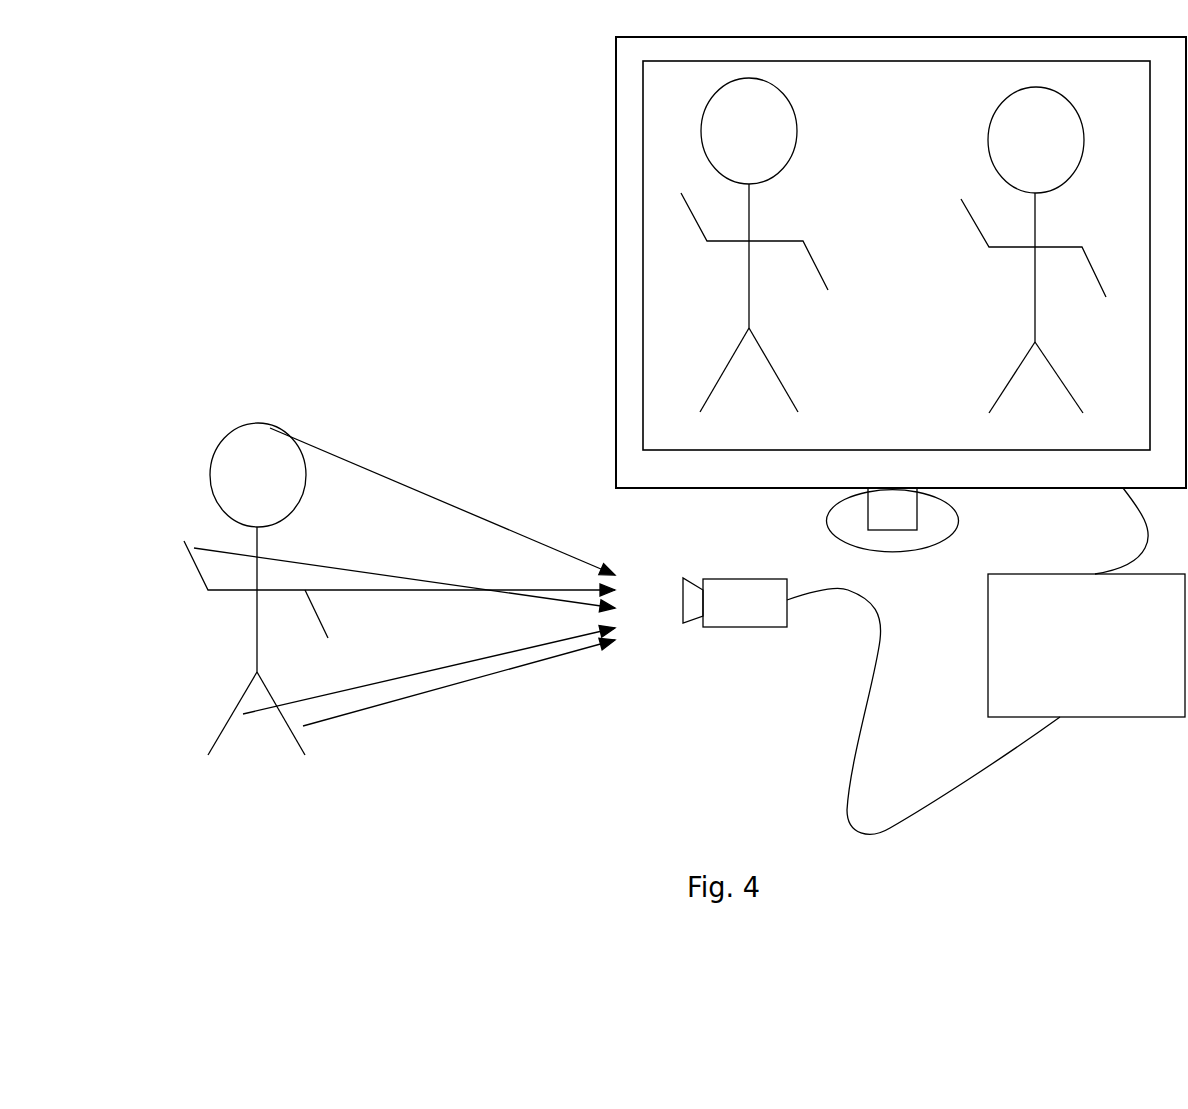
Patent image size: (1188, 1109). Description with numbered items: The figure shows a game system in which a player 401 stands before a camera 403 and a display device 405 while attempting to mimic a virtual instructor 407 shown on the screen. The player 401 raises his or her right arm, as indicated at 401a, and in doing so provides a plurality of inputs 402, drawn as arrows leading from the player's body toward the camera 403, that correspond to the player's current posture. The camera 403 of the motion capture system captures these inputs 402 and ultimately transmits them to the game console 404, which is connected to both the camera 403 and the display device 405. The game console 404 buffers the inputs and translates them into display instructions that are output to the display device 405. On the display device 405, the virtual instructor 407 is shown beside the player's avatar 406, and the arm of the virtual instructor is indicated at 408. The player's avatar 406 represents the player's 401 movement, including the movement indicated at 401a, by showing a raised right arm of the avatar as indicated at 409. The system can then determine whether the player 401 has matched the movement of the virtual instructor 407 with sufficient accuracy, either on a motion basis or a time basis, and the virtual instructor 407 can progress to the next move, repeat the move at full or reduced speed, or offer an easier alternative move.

The player 401 is at (236, 416).
The raised right arm 401a is at (178, 530).
The plurality of inputs 402 is at (453, 470).
The camera 403 is at (740, 573).
The game console 404 is at (1122, 737).
The display device 405 is at (582, 167).
The player's avatar 406 is at (963, 168).
The virtual instructor 407 is at (803, 212).
The virtual instructor arm 408 is at (681, 211).
The raised right arm of the player's avatar 409 is at (970, 243).